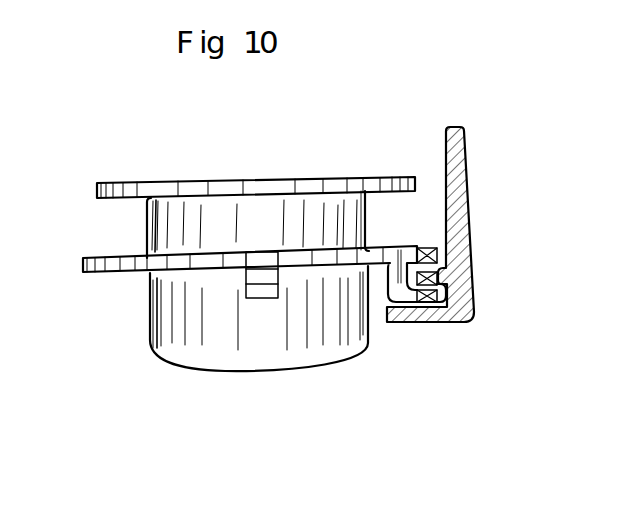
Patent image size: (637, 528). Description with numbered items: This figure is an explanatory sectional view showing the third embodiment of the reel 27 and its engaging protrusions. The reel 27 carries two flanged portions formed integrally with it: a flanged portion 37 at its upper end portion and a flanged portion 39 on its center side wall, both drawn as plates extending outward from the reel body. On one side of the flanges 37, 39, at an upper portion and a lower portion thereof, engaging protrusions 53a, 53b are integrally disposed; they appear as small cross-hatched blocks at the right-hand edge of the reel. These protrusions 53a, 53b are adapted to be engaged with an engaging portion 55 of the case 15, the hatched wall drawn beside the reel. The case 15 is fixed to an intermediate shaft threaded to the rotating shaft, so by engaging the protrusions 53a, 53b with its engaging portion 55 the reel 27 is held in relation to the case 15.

The case 15 is at (468, 156).
The reel 27 is at (146, 226).
The flanged portion 37 is at (258, 186).
The flanged portion 39 is at (347, 258).
The engaging protrusion 53a is at (426, 247).
The engaging protrusion 53b is at (428, 303).
The engaging portion 55 is at (442, 276).